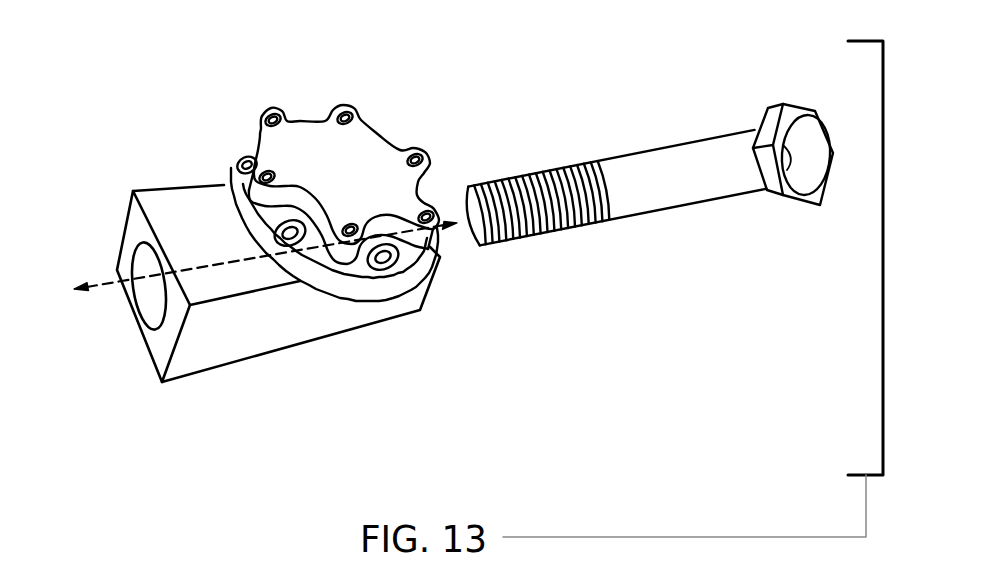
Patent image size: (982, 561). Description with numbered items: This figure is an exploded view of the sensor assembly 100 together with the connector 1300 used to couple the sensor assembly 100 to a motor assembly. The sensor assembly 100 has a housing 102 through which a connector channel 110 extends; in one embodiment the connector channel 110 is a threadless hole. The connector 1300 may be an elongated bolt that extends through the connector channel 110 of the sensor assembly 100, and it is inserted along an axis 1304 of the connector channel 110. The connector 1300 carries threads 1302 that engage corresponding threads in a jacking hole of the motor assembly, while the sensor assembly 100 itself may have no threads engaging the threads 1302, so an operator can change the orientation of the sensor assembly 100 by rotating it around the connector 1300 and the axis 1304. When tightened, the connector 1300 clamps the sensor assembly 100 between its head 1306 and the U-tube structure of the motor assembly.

The sensor assembly 100 is at (241, 308).
The housing 102 is at (241, 314).
The connector channel 110 is at (131, 319).
The connector 1300 is at (669, 203).
The threads 1302 is at (536, 250).
The axis 1304 is at (107, 278).
The head 1306 is at (795, 220).